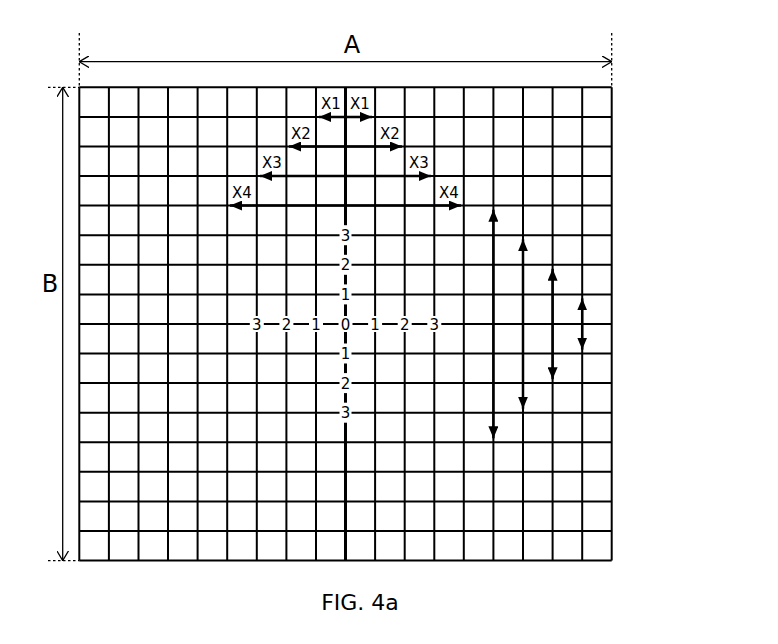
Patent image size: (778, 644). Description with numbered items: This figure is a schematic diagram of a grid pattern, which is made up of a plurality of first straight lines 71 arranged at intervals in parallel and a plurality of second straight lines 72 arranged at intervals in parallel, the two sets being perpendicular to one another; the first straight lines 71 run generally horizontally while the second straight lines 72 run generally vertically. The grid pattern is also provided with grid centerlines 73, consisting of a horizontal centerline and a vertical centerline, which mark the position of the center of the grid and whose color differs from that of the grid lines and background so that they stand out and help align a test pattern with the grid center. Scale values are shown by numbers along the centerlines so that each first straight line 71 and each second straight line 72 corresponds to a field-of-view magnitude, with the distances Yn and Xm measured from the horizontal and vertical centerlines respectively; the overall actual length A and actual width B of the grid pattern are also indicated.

The first straight lines 71 is at (568, 148).
The second straight lines 72 is at (582, 190).
The grid centerlines 73 is at (597, 322).